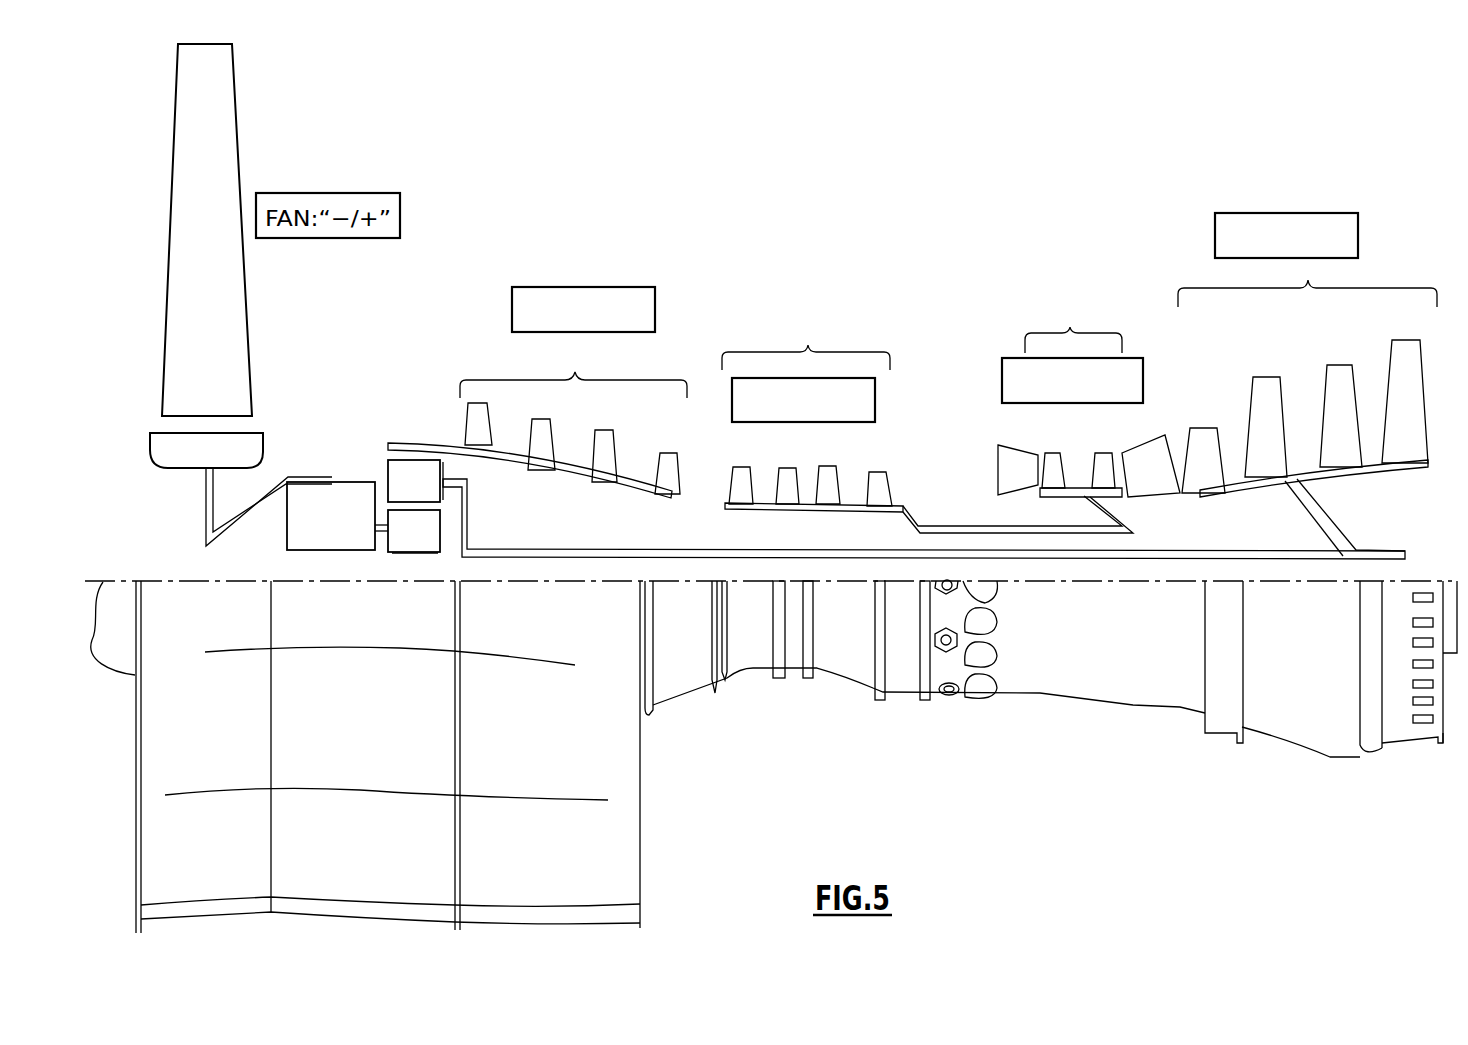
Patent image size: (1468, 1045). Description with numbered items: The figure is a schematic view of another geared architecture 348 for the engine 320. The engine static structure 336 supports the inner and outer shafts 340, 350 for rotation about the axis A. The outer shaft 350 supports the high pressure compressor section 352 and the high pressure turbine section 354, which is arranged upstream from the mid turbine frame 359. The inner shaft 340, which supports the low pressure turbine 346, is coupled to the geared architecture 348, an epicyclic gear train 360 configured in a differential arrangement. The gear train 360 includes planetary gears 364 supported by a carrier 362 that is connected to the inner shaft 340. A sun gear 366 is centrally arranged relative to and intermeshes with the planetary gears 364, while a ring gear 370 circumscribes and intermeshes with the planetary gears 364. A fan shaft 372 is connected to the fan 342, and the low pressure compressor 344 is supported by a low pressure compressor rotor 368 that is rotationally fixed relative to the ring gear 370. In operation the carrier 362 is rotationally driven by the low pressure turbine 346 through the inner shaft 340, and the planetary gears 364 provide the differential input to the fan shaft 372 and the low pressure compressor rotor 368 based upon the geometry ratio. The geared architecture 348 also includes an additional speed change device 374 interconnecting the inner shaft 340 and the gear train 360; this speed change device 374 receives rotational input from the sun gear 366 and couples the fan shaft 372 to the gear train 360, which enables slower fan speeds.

The engine 320 is at (875, 190).
The engine static structure 336 is at (996, 428).
The inner shaft 340 is at (653, 557).
The fan 342 is at (232, 129).
The low pressure compressor 344 is at (575, 372).
The low pressure turbine 346 is at (1308, 280).
The geared architecture 348 is at (424, 602).
The outer shaft 350 is at (1012, 535).
The high pressure compressor section 352 is at (808, 345).
The high pressure turbine section 354 is at (1070, 327).
The mid turbine frame 359 is at (1160, 435).
The epicyclic gear train 360 is at (397, 564).
The carrier 362 is at (469, 532).
The planetary gears 364 is at (386, 468).
The sun gear 366 is at (432, 553).
The low pressure compressor rotor 368 is at (503, 457).
The ring gear 370 is at (428, 443).
The fan shaft 372 is at (272, 480).
The speed change device 374 is at (316, 552).
The axis A is at (546, 582).